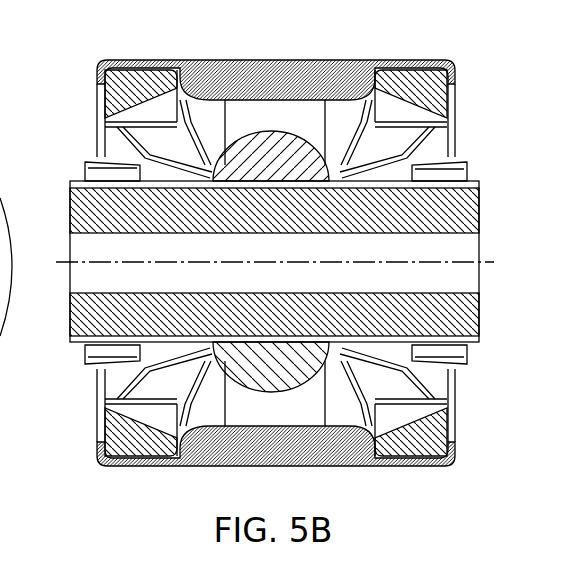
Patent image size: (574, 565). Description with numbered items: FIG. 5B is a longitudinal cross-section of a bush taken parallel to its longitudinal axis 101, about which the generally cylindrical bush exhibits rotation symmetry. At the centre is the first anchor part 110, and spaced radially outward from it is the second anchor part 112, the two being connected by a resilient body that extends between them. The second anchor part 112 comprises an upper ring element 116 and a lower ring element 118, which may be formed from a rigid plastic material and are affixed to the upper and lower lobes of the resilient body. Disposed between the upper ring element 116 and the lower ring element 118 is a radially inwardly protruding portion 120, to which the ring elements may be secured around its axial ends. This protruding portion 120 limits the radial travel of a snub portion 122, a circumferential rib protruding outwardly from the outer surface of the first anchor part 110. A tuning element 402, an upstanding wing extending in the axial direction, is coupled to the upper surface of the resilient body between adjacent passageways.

The longitudinal axis 101 is at (43, 189).
The first anchor part 110 is at (82, 188).
The second anchor part 112 is at (210, 66).
The upper ring element 116 is at (124, 83).
The lower ring element 118 is at (413, 75).
The radially inwardly protruding portion 120 is at (271, 102).
The snub portion 122 is at (290, 134).
The tuning element 402 is at (97, 361).